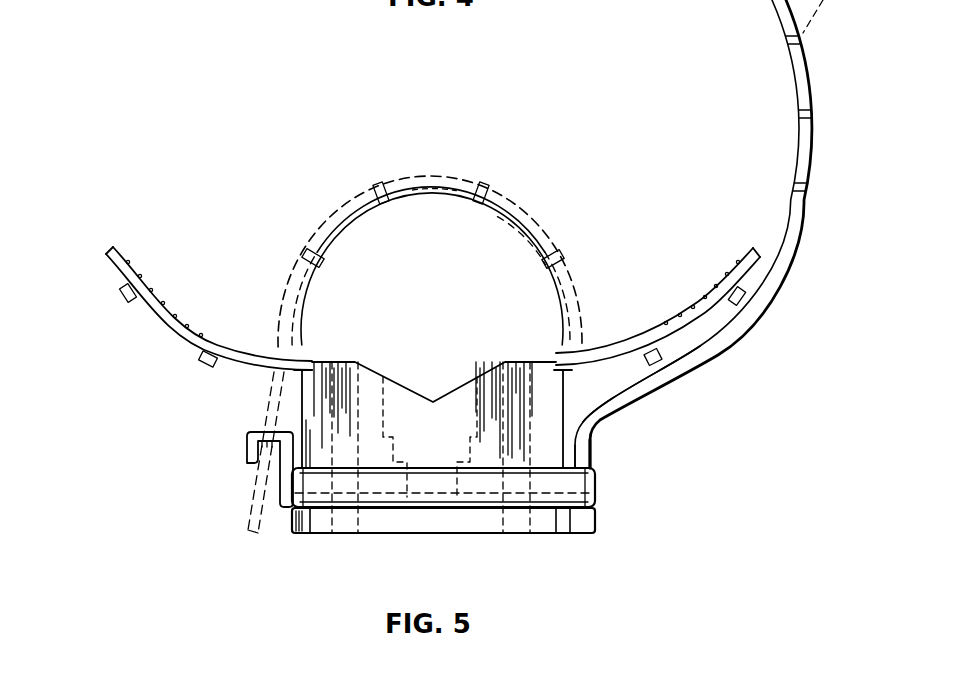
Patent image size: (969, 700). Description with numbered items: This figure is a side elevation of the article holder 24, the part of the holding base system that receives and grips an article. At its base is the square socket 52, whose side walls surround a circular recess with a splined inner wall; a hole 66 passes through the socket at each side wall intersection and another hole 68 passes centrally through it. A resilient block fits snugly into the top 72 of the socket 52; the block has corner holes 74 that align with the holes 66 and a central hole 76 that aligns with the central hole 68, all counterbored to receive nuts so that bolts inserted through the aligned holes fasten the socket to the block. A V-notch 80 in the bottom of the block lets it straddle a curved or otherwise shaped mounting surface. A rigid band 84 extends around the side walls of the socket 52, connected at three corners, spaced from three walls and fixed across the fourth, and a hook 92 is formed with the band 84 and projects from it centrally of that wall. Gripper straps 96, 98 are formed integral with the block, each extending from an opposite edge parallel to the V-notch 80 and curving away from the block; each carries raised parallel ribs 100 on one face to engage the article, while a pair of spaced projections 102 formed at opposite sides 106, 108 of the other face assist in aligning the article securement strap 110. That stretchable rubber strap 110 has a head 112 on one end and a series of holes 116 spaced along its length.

The article holder 24 is at (226, 110).
The socket 52 is at (292, 528).
The hole 66 is at (332, 522).
The hole 68 is at (468, 520).
The top 72 is at (572, 452).
The corner holes 74 is at (336, 366).
The central hole 76 is at (455, 413).
The V-notch 80 is at (404, 392).
The rigid band 84 is at (596, 490).
The hook 92 is at (246, 453).
The gripper strap 96 is at (118, 255).
The gripper strap 98 is at (753, 247).
The raised parallel ribs 100 is at (184, 318).
The projection 102 is at (124, 296).
The side 106 is at (710, 318).
The side 108 is at (158, 318).
The article securement strap 110 is at (417, 180).
The head 112 is at (597, 521).
The holes 116 is at (812, 112).